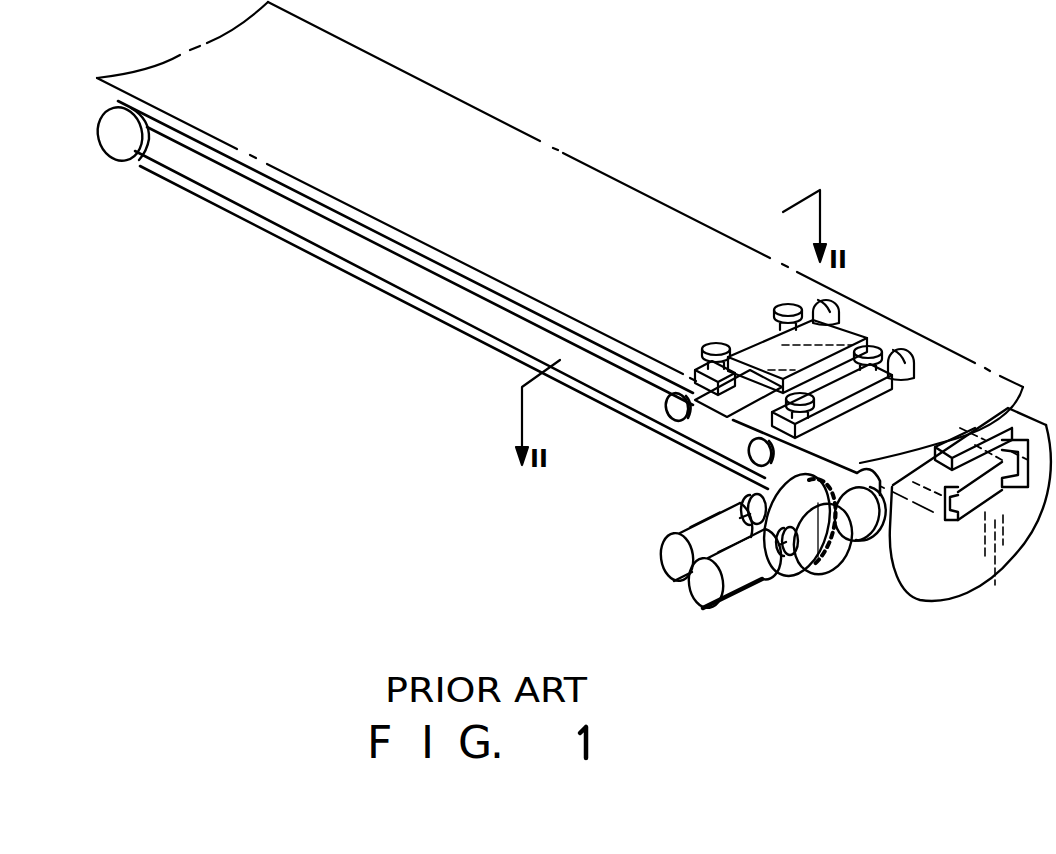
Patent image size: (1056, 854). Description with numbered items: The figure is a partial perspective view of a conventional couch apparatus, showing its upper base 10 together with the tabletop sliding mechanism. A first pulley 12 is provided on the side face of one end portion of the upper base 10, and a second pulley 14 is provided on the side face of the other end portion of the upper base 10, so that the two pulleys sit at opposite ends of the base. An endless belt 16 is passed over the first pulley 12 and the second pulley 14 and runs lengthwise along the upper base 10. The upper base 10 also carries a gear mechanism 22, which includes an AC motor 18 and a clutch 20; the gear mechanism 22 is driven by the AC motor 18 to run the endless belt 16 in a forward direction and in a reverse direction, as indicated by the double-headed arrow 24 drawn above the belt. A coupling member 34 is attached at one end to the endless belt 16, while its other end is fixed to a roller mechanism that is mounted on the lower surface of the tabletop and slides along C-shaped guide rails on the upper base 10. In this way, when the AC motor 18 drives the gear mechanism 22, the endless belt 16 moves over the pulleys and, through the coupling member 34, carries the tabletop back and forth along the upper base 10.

The upper base 10 is at (928, 588).
The first pulley 12 is at (866, 533).
The second pulley 14 is at (128, 152).
The endless belt 16 is at (440, 318).
The AC motor 18 is at (677, 570).
The clutch 20 is at (750, 593).
The gear mechanism 22 is at (808, 572).
The double-headed arrow 24 is at (557, 232).
The coupling member 34 is at (725, 400).